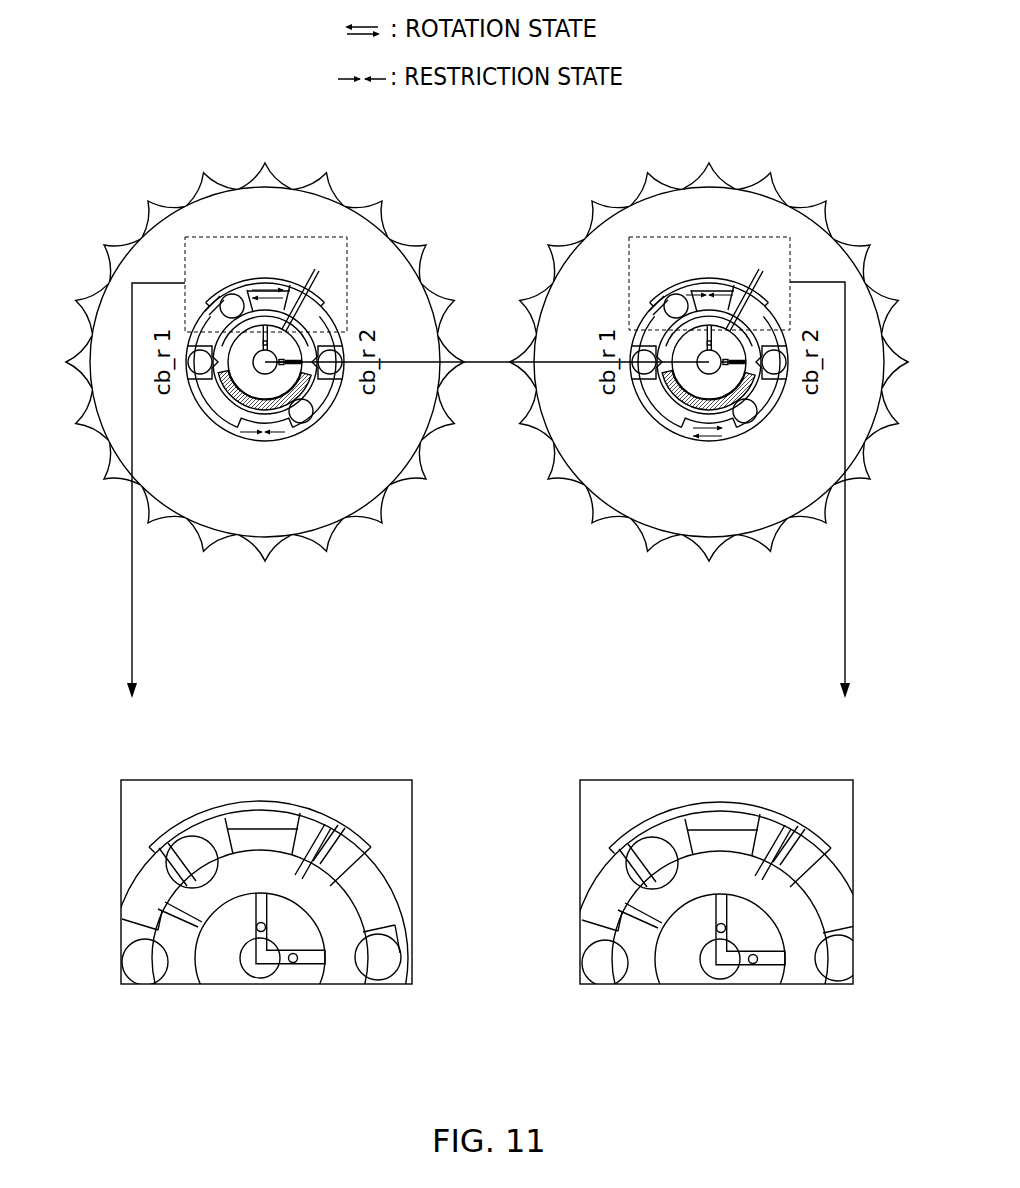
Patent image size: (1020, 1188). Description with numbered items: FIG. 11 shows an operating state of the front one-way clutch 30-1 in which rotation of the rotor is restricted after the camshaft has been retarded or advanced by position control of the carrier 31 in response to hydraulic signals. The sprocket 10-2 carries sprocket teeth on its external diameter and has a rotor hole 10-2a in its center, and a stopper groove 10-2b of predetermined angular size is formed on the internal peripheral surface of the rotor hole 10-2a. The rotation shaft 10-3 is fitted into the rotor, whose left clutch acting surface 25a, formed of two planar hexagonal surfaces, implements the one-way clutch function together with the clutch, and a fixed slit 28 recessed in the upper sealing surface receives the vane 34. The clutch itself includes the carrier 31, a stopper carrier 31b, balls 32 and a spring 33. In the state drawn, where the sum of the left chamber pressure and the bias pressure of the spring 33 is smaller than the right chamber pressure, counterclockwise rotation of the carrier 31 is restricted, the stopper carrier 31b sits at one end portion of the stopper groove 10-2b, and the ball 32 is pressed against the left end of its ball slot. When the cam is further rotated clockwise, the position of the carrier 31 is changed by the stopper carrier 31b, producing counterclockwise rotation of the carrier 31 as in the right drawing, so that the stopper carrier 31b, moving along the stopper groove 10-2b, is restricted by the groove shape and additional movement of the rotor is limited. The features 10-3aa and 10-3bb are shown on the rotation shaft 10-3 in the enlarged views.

The front one-way clutch 30-1 is at (290, 207).
The carrier 31 is at (234, 307).
The stopper carrier 31b is at (305, 272).
The ball 32 is at (207, 300).
The sprocket 10-2 is at (223, 790).
The rotor hole 10-2a is at (158, 877).
The stopper groove 10-2b is at (253, 288).
The rotation shaft 10-3 is at (280, 383).
The pin 10-3aa is at (313, 960).
The pin 10-3bb is at (257, 910).
The left clutch acting surface 25a is at (213, 425).
The fixed slit 28 is at (382, 872).
The spring 33 is at (318, 838).
The vane 34 is at (300, 830).